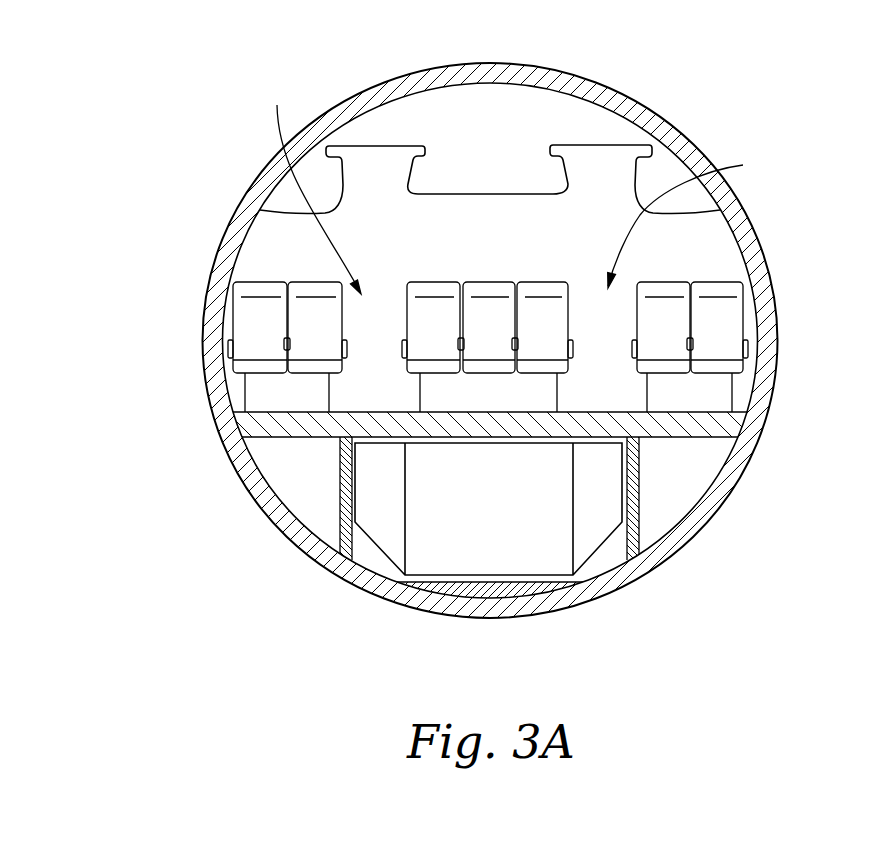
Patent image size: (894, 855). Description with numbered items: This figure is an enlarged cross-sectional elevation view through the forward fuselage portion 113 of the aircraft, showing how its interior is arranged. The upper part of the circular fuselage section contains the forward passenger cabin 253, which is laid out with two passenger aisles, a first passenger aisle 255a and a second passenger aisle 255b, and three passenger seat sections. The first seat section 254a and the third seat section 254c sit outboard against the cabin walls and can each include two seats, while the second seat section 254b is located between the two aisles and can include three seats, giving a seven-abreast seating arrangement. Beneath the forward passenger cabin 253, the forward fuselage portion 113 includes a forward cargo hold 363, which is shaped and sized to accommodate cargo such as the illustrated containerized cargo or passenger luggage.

The forward fuselage portion 113 is at (621, 95).
The forward passenger cabin 253 is at (280, 243).
The first seat section 254a is at (258, 303).
The second seat section 254b is at (398, 340).
The third seat section 254c is at (737, 313).
The first passenger aisle 255a is at (309, 183).
The second passenger aisle 255b is at (709, 220).
The forward cargo hold 363 is at (370, 498).